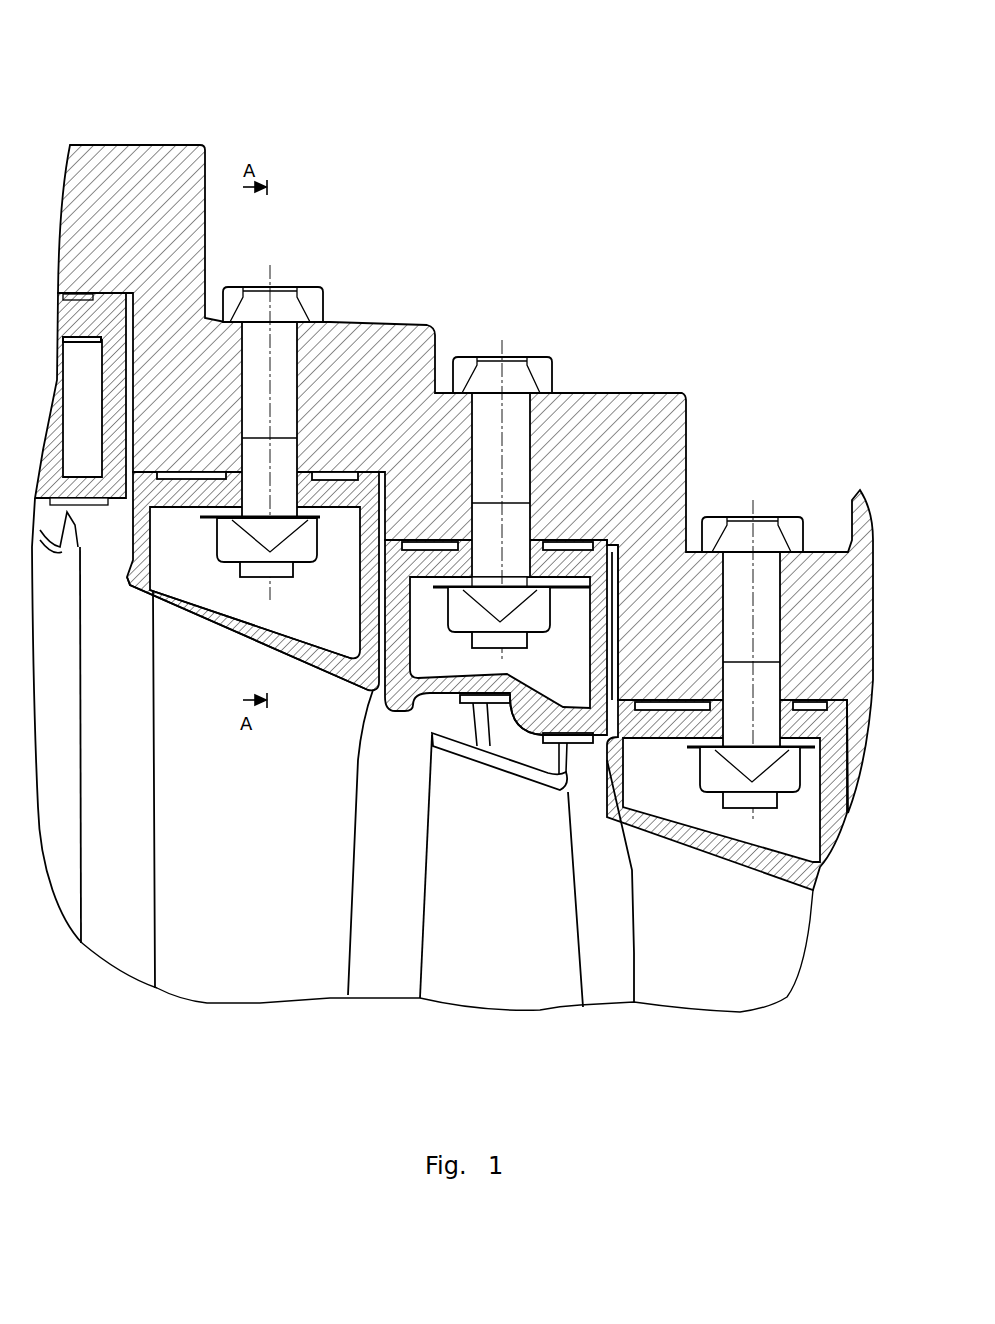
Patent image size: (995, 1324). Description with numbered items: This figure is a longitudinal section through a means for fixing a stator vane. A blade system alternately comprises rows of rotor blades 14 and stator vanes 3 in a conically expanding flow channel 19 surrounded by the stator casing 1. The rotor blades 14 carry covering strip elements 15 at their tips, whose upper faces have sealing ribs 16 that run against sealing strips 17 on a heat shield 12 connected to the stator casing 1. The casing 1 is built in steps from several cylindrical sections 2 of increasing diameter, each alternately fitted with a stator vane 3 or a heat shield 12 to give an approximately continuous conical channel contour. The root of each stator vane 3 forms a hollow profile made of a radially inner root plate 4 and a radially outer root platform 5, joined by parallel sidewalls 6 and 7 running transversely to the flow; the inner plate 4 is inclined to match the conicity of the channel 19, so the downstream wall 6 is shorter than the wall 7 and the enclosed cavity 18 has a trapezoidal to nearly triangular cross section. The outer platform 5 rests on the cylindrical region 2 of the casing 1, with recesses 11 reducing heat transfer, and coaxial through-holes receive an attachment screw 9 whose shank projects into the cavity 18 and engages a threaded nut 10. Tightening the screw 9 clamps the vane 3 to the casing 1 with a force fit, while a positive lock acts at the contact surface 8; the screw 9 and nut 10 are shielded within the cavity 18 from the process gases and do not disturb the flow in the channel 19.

The stator casing 1 is at (110, 207).
The cylindrical section 2 is at (223, 287).
The stator vane 3 is at (313, 893).
The radially inner root plate 4 is at (290, 655).
The radially outer root platform 5 is at (328, 488).
The downstream sidewall 6 is at (147, 455).
The upstream sidewall 7 is at (405, 540).
The contact surface 8 is at (398, 465).
The attachment screw 9 is at (312, 285).
The threaded nut 10 is at (305, 540).
The recess 11 is at (203, 452).
The heat shield 12 is at (598, 560).
The rotor blade 14 is at (527, 913).
The covering strip element 15 is at (511, 775).
The sealing rib 16 is at (562, 743).
The sealing strip 17 is at (580, 747).
The cavity 18 is at (225, 585).
The flow channel 19 is at (390, 897).